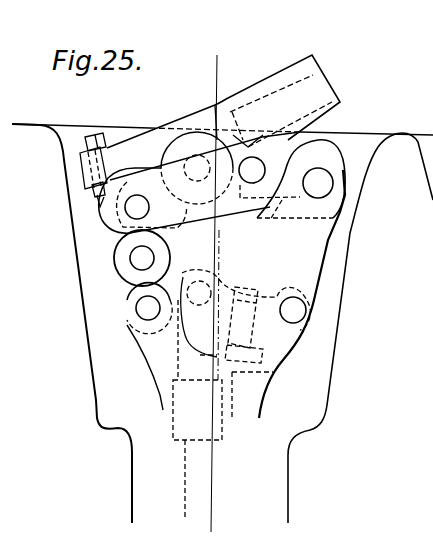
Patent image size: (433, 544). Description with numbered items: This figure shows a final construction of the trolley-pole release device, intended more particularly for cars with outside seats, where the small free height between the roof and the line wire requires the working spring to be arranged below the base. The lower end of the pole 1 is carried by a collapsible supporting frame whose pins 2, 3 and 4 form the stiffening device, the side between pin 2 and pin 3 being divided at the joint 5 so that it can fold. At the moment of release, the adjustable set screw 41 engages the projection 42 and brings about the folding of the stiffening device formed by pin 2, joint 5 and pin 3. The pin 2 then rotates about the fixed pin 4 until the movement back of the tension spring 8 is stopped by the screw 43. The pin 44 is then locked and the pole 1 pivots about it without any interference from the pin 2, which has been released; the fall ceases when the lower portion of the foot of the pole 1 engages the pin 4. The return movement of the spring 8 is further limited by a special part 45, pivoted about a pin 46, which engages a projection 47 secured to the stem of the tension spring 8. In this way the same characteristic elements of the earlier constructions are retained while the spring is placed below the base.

The pole 1 is at (318, 78).
The pin 2 is at (143, 207).
The pin 3 is at (147, 310).
The pin 4 is at (327, 187).
The joint 5 is at (135, 256).
The tension spring 8 is at (203, 477).
The set screw 41 is at (100, 158).
The projection 42 is at (109, 186).
The screw 43 is at (247, 327).
The pin 44 is at (192, 167).
The special part 45 is at (290, 333).
The pin 46 is at (300, 310).
The projection 47 is at (200, 293).